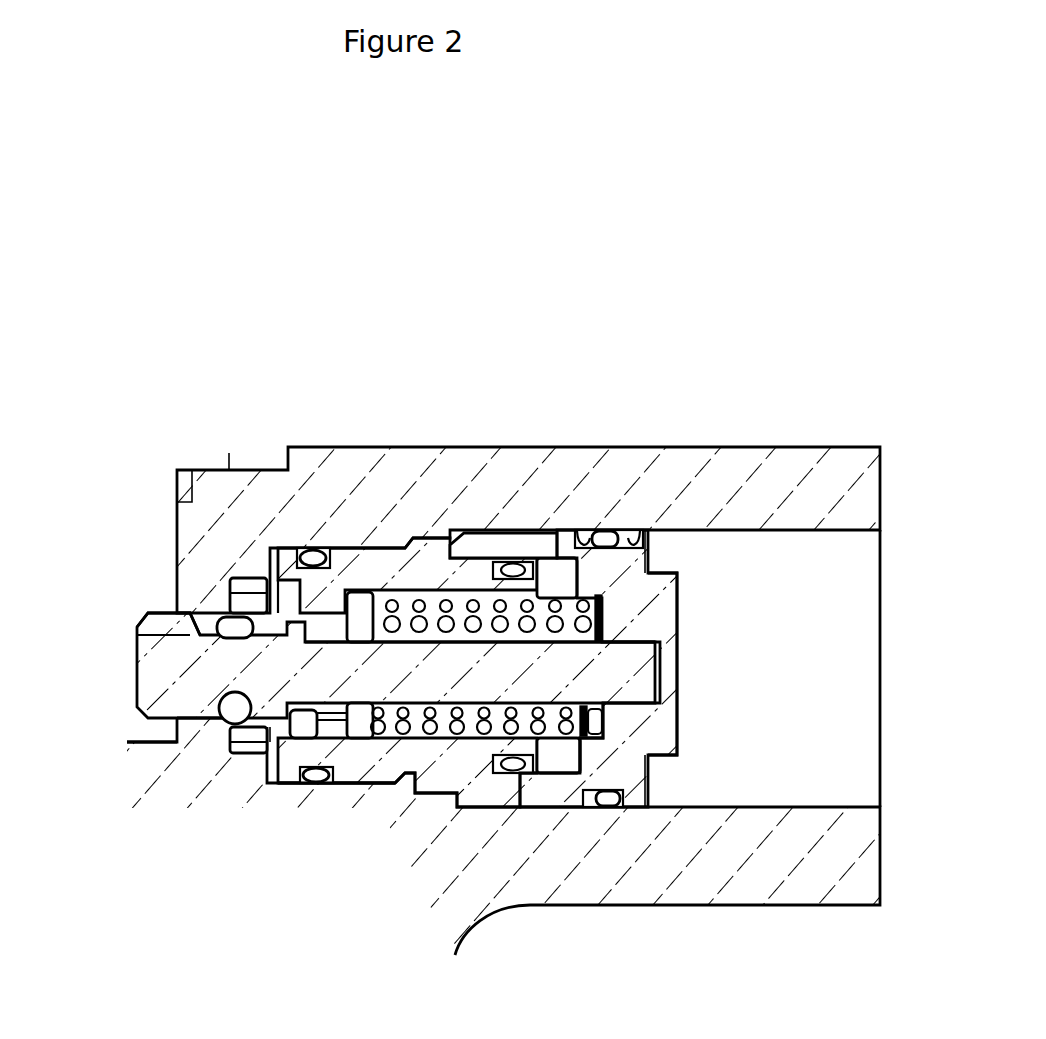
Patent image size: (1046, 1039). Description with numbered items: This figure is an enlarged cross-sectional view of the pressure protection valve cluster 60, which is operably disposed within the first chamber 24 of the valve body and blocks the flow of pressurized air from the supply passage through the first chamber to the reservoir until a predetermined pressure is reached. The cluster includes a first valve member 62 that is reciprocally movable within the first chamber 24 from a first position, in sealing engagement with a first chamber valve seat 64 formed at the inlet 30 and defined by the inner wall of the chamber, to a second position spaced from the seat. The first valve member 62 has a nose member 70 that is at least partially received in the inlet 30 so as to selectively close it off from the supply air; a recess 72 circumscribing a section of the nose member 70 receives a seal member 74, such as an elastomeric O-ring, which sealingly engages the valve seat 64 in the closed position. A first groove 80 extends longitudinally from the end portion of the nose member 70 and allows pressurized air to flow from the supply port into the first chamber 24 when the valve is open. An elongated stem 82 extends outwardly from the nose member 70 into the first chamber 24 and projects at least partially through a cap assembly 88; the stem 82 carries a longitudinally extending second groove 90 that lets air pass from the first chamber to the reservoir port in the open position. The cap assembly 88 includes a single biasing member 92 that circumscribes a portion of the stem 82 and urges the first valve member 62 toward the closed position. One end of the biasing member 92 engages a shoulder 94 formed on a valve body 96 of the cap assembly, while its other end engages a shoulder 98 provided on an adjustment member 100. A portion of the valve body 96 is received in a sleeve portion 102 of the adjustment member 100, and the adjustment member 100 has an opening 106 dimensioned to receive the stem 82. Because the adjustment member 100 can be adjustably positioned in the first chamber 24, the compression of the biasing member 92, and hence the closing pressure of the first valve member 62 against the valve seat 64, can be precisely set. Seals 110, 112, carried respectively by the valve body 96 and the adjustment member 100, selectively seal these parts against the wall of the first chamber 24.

The first chamber 24 is at (298, 788).
The inlet 30 is at (200, 720).
The pressure protection valve cluster 60 is at (363, 518).
The first valve member 62 is at (125, 712).
The first chamber valve seat 64 is at (229, 611).
The nose member 70 is at (147, 676).
The recess 72 is at (236, 693).
The seal member 74 is at (233, 729).
The first groove 80 is at (140, 625).
The stem 82 is at (428, 682).
The cap assembly 88 is at (470, 530).
The second groove 90 is at (607, 640).
The biasing member 92 is at (483, 722).
The shoulder 94 is at (338, 768).
The valve body 96 is at (352, 553).
The shoulder 98 is at (627, 713).
The adjustment member 100 is at (540, 787).
The sleeve portion 102 is at (553, 556).
The opening 106 is at (678, 637).
The seal 110 is at (312, 552).
The seal 112 is at (608, 806).